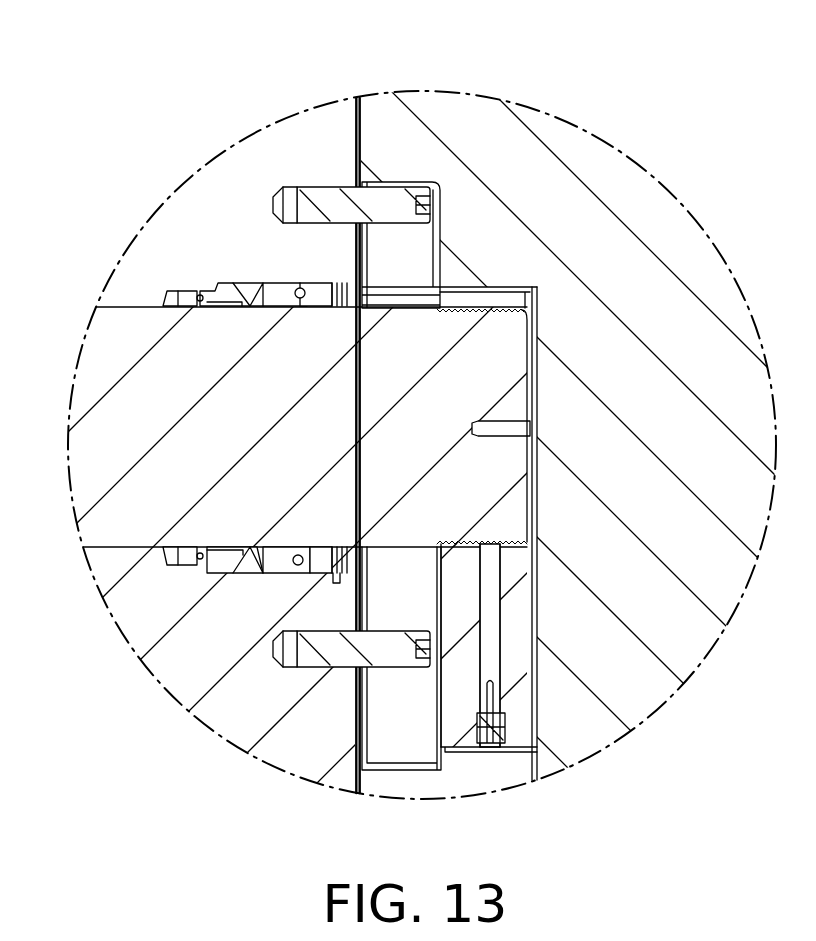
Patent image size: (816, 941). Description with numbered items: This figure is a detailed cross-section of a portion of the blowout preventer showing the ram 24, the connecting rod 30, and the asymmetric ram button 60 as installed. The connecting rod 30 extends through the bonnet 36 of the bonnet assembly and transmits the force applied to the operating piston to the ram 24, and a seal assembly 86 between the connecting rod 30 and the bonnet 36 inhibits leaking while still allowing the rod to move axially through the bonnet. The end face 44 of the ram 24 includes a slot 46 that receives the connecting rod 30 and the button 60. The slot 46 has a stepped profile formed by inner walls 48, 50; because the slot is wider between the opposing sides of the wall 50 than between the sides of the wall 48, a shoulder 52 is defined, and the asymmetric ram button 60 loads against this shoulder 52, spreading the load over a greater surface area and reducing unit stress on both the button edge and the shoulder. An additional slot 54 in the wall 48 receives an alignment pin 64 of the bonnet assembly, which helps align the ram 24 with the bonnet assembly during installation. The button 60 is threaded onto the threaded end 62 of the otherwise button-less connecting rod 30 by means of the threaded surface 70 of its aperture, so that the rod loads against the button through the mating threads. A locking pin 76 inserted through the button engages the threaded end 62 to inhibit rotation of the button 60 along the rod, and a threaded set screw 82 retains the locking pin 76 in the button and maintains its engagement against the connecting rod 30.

The ram 24 is at (688, 632).
The connecting rod 30 is at (105, 348).
The bonnet 36 is at (167, 665).
The end face 44 is at (355, 128).
The slot 46 is at (478, 772).
The inner wall 48 is at (388, 752).
The inner wall 50 is at (450, 753).
The shoulder 52 is at (455, 288).
The additional slot 54 is at (400, 186).
The asymmetric ram button 60 is at (528, 723).
The threaded end 62 is at (443, 306).
The alignment pin 64 is at (307, 198).
The threaded surface 70 is at (508, 312).
The locking pin 76 is at (493, 628).
The threaded set screw 82 is at (493, 750).
The seal assembly 86 is at (272, 282).